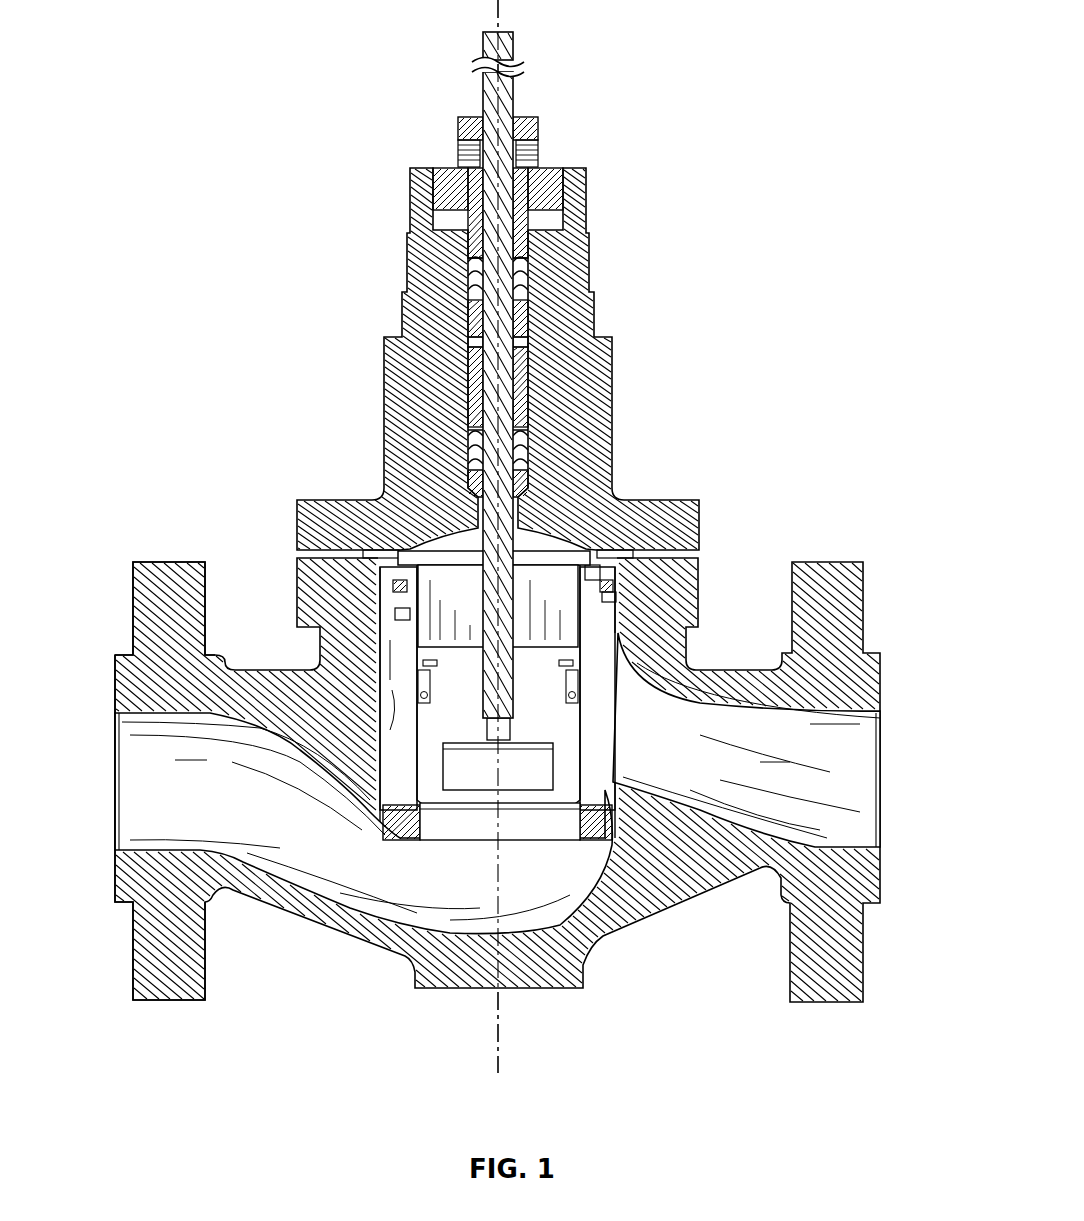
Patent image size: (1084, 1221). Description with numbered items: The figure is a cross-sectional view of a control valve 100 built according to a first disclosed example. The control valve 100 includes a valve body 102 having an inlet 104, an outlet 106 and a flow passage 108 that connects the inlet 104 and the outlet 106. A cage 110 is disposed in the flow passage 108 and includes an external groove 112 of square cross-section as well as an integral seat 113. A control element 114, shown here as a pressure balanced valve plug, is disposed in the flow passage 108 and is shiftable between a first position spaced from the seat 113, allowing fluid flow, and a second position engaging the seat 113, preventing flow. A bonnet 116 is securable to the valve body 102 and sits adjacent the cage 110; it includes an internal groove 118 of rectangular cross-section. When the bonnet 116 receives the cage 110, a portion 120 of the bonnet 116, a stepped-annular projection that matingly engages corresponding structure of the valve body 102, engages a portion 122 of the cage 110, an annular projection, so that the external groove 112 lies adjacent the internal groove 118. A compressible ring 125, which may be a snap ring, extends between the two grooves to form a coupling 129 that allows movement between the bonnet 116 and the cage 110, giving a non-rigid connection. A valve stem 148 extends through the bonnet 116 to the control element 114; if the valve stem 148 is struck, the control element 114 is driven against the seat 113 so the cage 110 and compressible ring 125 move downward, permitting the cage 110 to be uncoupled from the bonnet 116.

The control valve 100 is at (704, 72).
The valve body 102 is at (833, 610).
The inlet 104 is at (122, 703).
The outlet 106 is at (860, 712).
The flow passage 108 is at (167, 811).
The cage 110 is at (400, 640).
The external groove 112 is at (399, 582).
The seat 113 is at (403, 817).
The control element 114 is at (560, 737).
The bonnet 116 is at (598, 430).
The internal groove 118 is at (617, 585).
The portion of the bonnet 120 is at (620, 593).
The portion of the cage 122 is at (590, 567).
The compressible ring 125 is at (383, 613).
The coupling 129 is at (383, 585).
The valve stem 148 is at (485, 283).